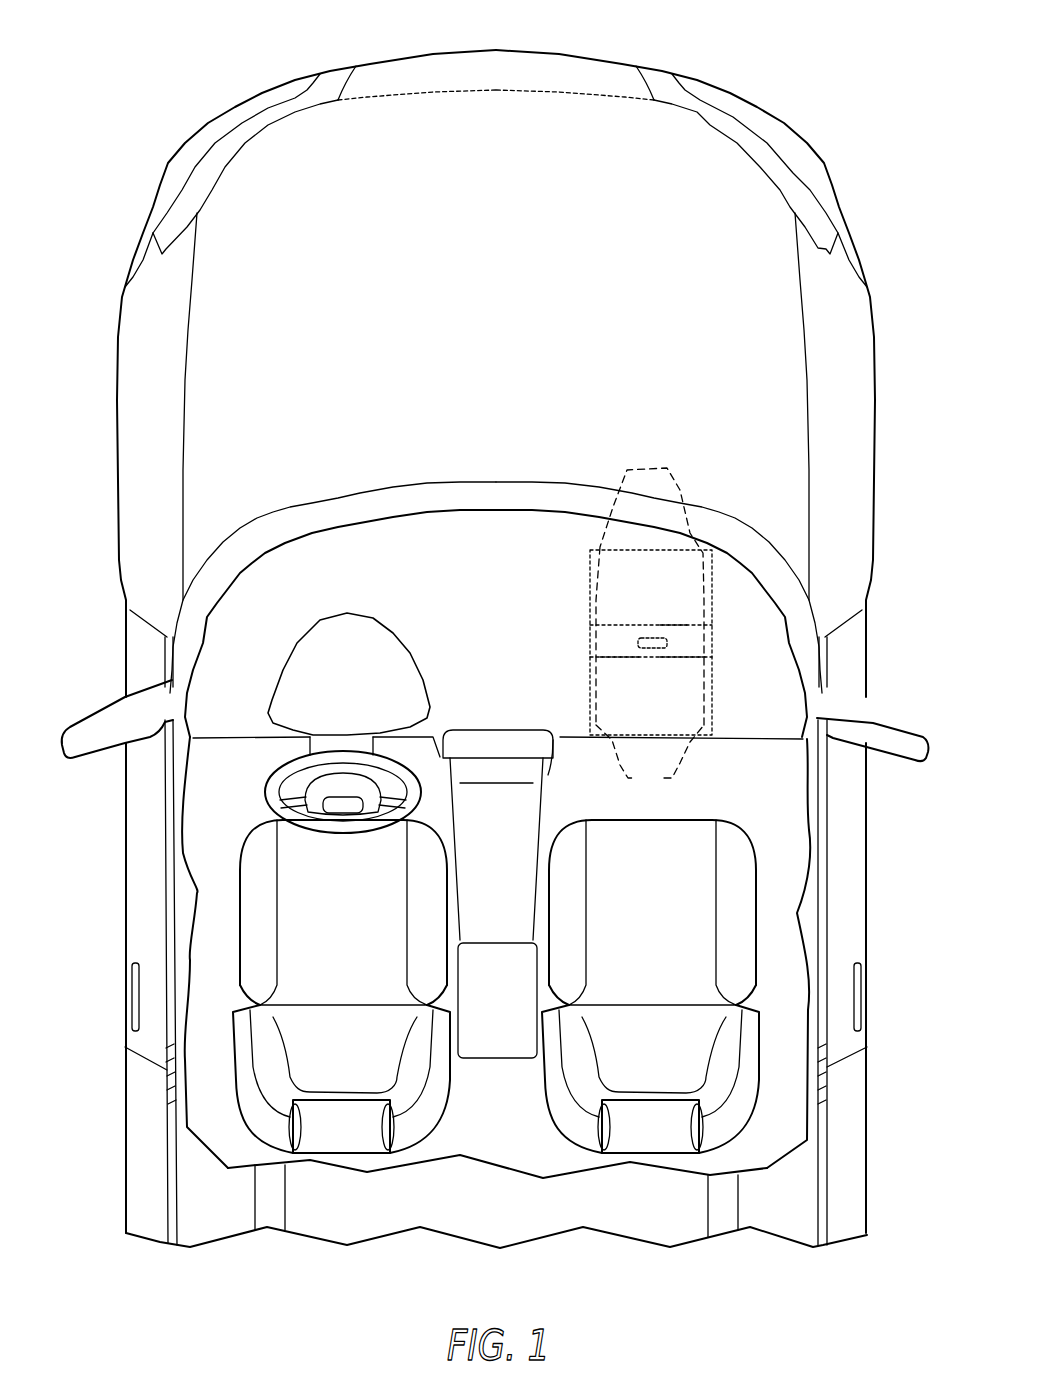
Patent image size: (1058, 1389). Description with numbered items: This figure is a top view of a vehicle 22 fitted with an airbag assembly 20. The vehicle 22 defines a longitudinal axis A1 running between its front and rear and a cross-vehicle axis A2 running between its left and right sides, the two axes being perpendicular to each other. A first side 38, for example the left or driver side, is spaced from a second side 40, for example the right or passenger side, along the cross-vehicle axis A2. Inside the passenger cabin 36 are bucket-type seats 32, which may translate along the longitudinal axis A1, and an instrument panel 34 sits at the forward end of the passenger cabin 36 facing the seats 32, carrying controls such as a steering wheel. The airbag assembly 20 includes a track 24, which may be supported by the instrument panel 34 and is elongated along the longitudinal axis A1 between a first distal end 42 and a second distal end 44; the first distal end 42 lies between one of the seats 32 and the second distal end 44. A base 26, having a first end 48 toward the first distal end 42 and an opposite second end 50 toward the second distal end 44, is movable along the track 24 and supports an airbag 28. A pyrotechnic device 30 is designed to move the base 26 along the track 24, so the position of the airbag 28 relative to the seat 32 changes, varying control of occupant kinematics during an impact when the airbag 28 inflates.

The airbag assembly 20 is at (537, 655).
The vehicle 22 is at (168, 74).
The track 24 is at (588, 577).
The base 26 is at (622, 658).
The airbag 28 is at (668, 645).
The pyrotechnic device 30 is at (588, 657).
The seat 32 is at (737, 957).
The instrument panel 34 is at (445, 543).
The passenger cabin 36 is at (760, 810).
The first side 38 is at (143, 897).
The second side 40 is at (847, 787).
The first distal end 42 is at (650, 758).
The second distal end 44 is at (650, 590).
The first end 48 is at (680, 660).
The second end 50 is at (672, 625).
The longitudinal axis A1 is at (925, 353).
The cross-vehicle axis A2 is at (647, 10).